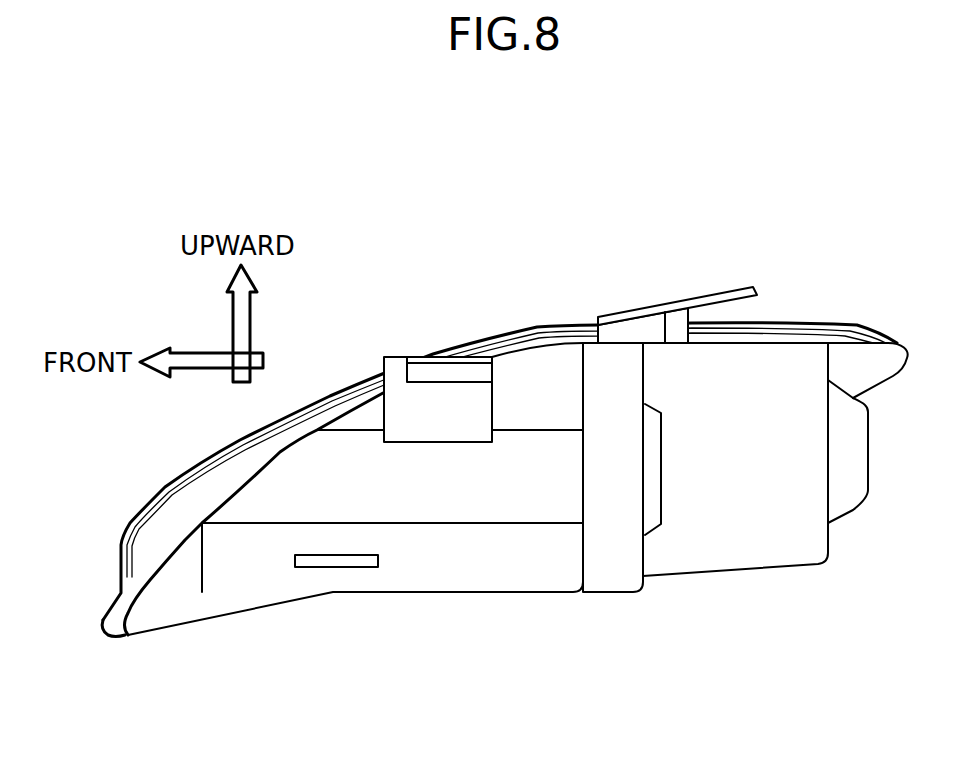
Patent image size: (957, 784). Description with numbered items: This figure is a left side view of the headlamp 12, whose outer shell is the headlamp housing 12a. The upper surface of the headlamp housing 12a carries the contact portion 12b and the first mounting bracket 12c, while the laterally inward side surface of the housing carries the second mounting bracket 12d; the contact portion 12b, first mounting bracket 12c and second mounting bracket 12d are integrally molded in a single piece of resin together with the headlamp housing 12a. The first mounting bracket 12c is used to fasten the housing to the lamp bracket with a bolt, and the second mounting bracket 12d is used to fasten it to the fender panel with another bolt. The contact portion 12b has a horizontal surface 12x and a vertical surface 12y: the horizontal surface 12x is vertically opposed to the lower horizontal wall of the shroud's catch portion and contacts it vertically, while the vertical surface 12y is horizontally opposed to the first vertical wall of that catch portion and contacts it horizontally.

The headlamp 12 is at (537, 327).
The headlamp housing 12a is at (710, 553).
The contact portion 12b is at (441, 345).
The first mounting bracket 12c is at (680, 303).
The second mounting bracket 12d is at (342, 560).
The horizontal surface 12x is at (452, 380).
The vertical surface 12y is at (498, 287).